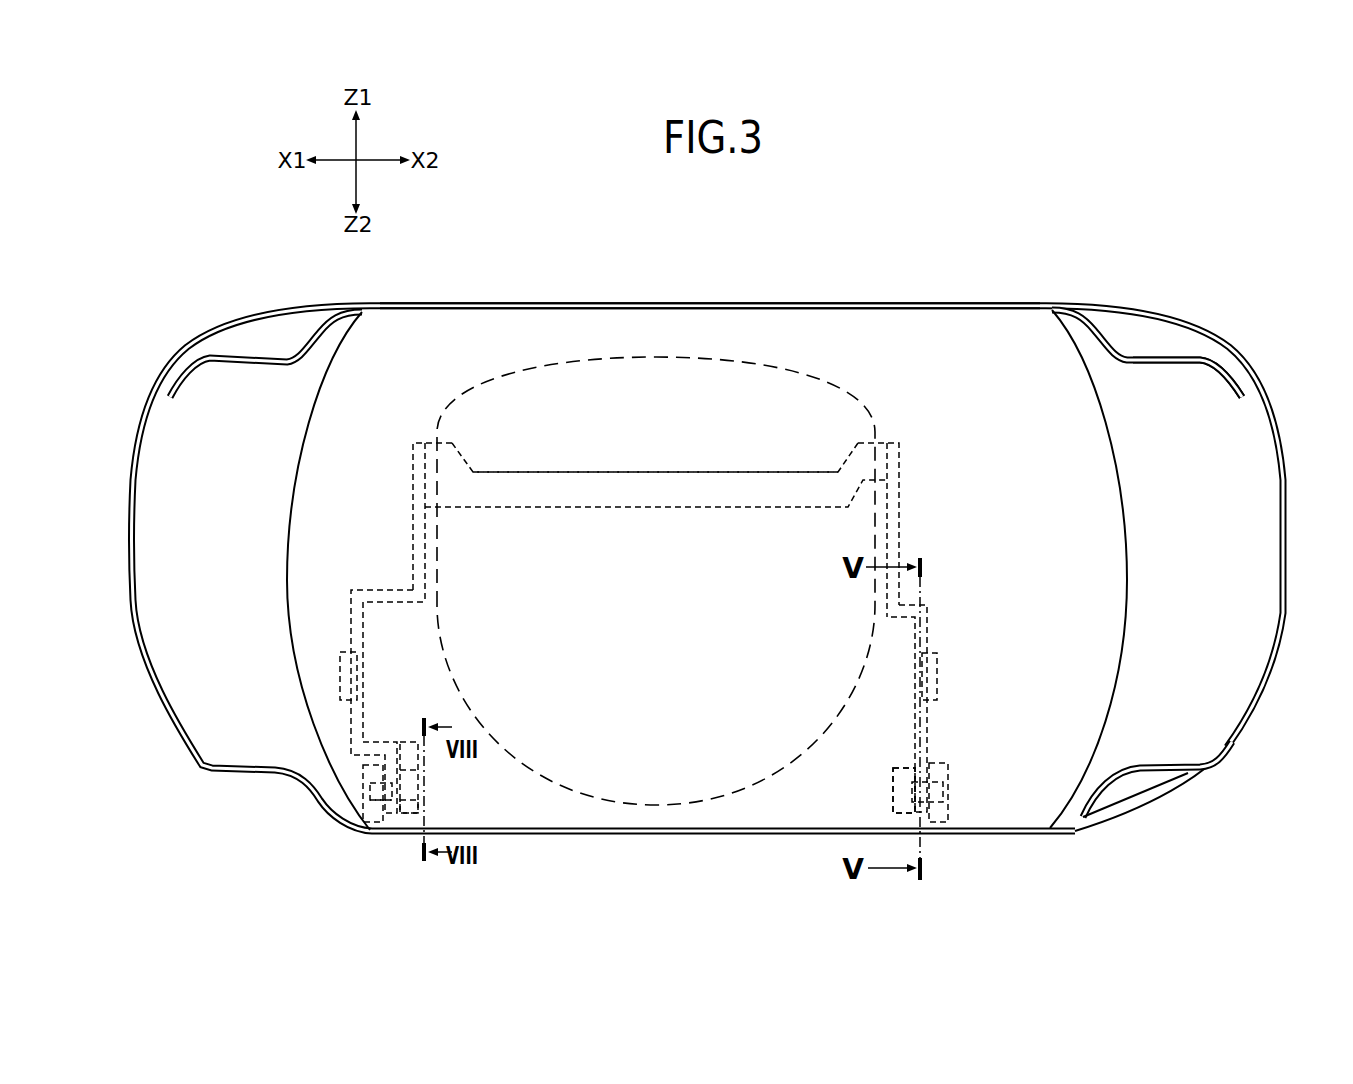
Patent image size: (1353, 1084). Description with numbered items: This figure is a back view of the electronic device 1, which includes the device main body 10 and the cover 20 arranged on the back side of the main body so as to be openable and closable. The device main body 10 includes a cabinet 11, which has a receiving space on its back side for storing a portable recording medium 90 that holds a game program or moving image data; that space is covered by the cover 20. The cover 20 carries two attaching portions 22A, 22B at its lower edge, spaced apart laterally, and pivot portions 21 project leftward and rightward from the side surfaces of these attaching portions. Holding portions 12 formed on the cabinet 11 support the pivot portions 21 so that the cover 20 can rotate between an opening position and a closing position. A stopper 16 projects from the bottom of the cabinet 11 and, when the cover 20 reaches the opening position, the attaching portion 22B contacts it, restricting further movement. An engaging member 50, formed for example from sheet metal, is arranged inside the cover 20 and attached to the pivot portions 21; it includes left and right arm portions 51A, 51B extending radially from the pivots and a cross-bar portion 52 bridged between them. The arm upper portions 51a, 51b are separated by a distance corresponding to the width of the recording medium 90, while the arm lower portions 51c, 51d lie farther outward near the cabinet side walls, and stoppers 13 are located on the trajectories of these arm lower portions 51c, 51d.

The electronic device 1 is at (839, 262).
The device main body 10 is at (1125, 338).
The cabinet 11 is at (1173, 370).
The holding portion 12 is at (378, 828).
The stopper 13 is at (362, 672).
The stopper 16 is at (410, 740).
The cover 20 is at (729, 320).
The pivot portion 21 is at (375, 784).
The attaching portion 22A is at (893, 800).
The attaching portion 22B is at (410, 832).
The engaging member 50 is at (701, 464).
The arm upper portion 51a is at (899, 497).
The arm upper portion 51b is at (413, 522).
The arm lower portion 51c is at (961, 686).
The arm lower portion 51d is at (351, 617).
The arm portion 51A is at (981, 627).
The arm portion 51B is at (303, 628).
The cross-bar portion 52 is at (623, 470).
The portable recording medium 90 is at (578, 358).